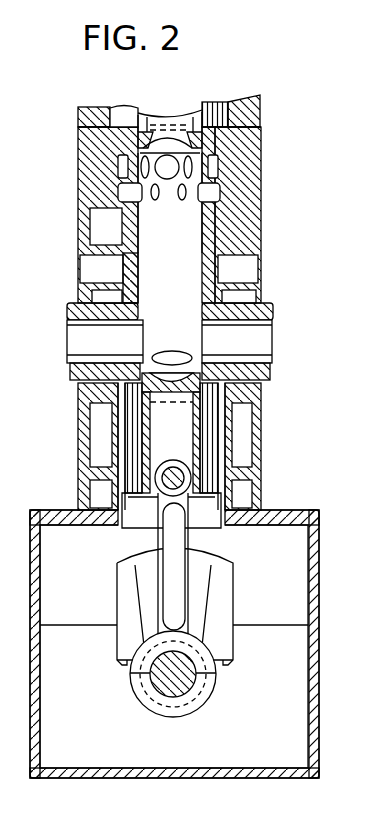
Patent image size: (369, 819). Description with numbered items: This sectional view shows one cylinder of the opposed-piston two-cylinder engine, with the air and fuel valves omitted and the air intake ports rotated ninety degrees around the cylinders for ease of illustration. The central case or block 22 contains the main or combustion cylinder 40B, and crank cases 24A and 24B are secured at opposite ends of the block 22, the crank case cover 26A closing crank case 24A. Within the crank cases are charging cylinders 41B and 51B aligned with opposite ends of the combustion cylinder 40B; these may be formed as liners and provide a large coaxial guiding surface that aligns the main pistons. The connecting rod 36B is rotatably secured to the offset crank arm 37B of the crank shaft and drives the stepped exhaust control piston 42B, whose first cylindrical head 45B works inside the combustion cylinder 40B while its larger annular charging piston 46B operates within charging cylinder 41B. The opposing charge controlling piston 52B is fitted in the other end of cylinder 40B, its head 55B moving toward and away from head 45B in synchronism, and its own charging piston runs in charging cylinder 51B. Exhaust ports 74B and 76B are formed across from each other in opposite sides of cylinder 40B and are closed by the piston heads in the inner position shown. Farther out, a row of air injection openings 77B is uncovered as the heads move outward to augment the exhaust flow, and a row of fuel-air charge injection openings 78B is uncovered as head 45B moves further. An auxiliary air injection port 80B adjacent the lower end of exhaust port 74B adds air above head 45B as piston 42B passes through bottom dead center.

The central case or block 22 is at (262, 192).
The crank case 24A is at (287, 410).
The crank case 24B is at (248, 100).
The crank case cover 26A is at (45, 747).
The connecting rod 36B is at (170, 540).
The offset crank arm 37B is at (183, 693).
The main or combustion cylinder 40B is at (221, 300).
The charging cylinder 41B is at (112, 492).
The exhaust control piston 42B is at (112, 450).
The piston head 45B is at (173, 392).
The charging piston 46B is at (138, 530).
The charging cylinder 51B is at (120, 112).
The charge controlling piston 52B is at (150, 122).
The piston head 55B is at (135, 133).
The exhaust port 74B is at (268, 336).
The exhaust port 76B is at (80, 338).
The air injection openings 77B is at (140, 205).
The fuel-air charge injection openings 78B is at (118, 167).
The auxiliary air injection port 80B is at (172, 352).